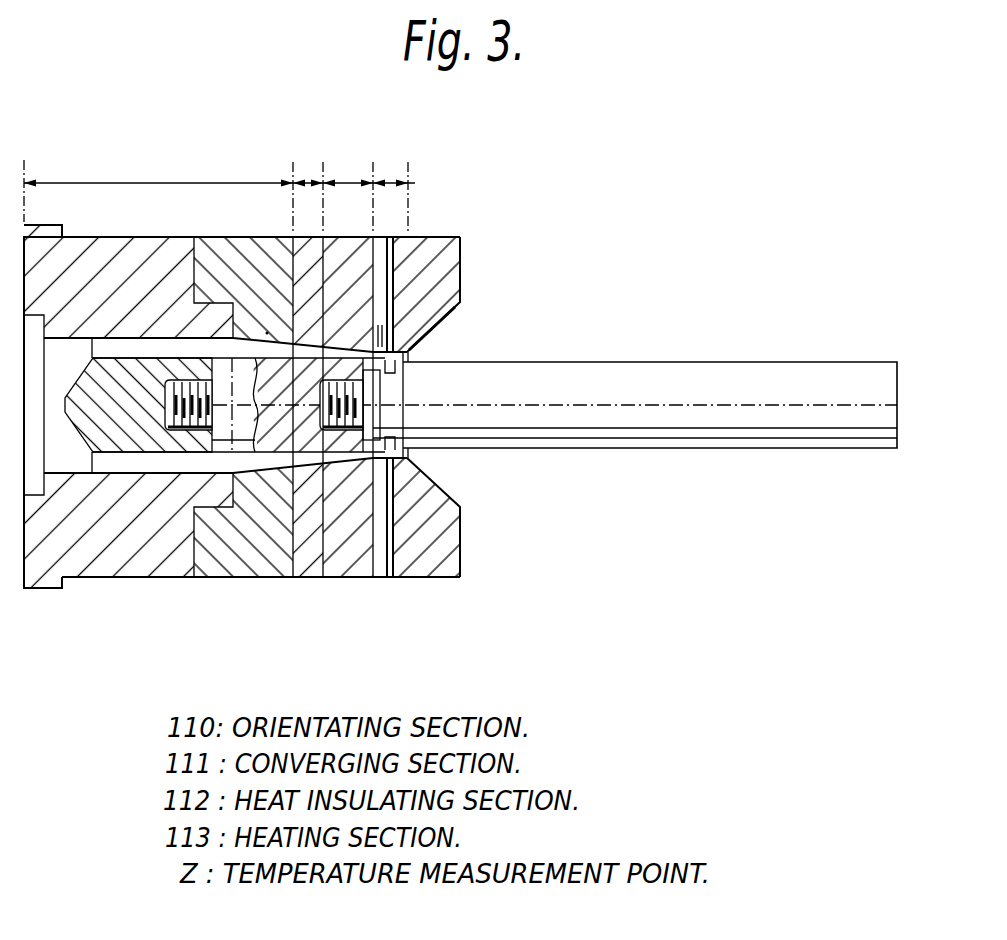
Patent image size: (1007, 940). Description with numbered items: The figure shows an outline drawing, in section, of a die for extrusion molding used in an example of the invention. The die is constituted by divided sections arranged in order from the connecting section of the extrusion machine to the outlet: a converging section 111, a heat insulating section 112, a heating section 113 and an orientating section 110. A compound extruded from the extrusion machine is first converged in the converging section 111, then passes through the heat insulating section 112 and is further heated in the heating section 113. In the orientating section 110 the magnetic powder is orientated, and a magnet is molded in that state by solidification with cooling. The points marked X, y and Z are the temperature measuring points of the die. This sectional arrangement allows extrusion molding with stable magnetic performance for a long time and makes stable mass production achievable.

The orientating section 110 is at (392, 183).
The converging section 111 is at (460, 371).
The heat insulating section 112 is at (308, 183).
The heating section 113 is at (345, 183).
The temperature measuring point Z is at (267, 332).
The temperature measuring point X is at (399, 345).
The temperature measuring point y is at (384, 333).